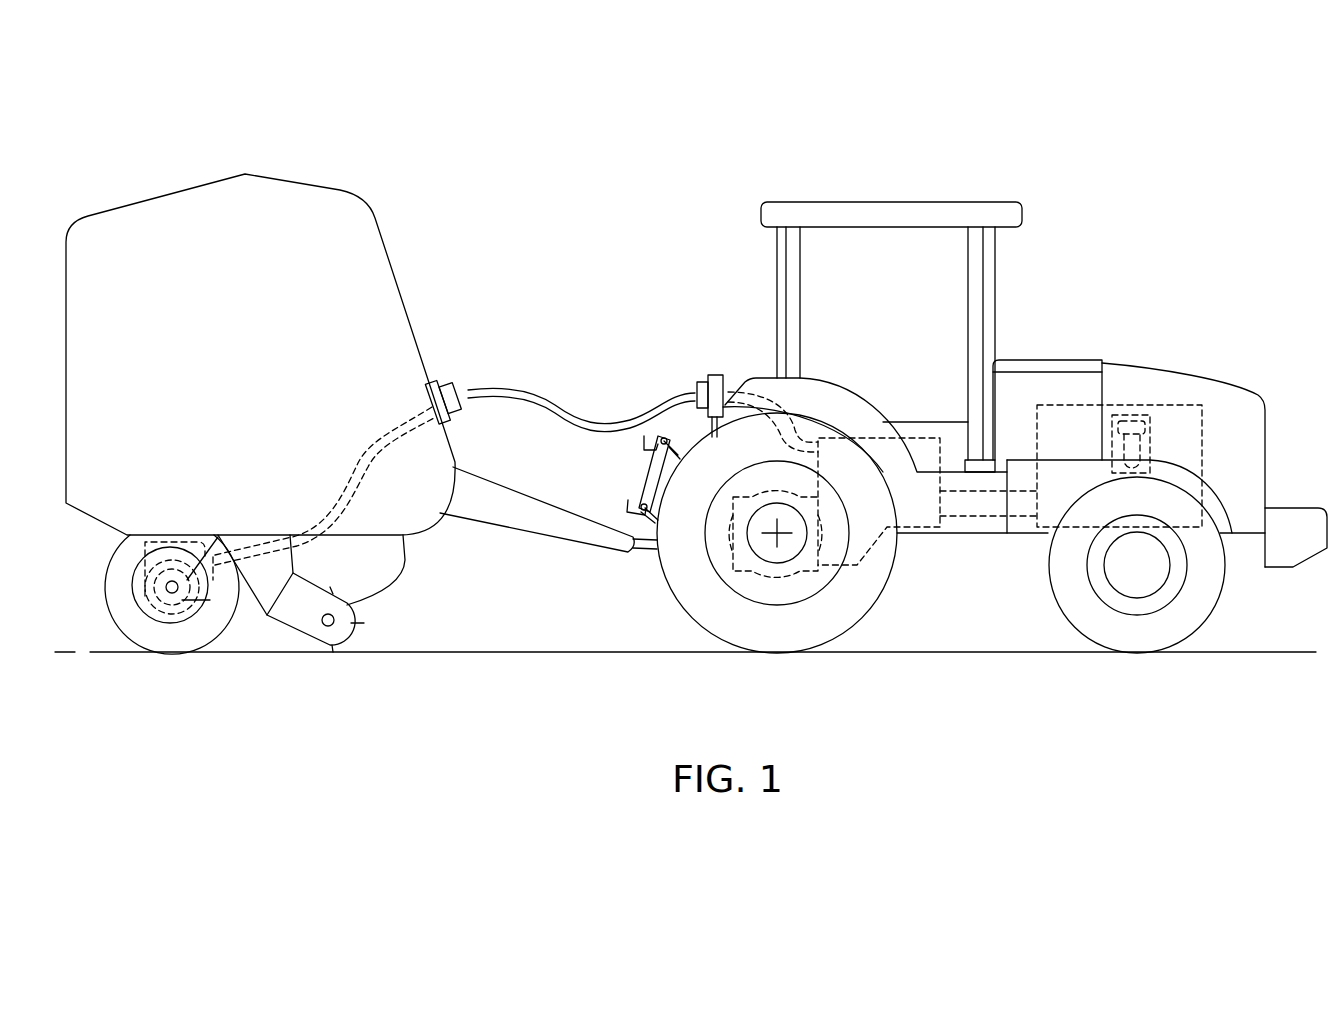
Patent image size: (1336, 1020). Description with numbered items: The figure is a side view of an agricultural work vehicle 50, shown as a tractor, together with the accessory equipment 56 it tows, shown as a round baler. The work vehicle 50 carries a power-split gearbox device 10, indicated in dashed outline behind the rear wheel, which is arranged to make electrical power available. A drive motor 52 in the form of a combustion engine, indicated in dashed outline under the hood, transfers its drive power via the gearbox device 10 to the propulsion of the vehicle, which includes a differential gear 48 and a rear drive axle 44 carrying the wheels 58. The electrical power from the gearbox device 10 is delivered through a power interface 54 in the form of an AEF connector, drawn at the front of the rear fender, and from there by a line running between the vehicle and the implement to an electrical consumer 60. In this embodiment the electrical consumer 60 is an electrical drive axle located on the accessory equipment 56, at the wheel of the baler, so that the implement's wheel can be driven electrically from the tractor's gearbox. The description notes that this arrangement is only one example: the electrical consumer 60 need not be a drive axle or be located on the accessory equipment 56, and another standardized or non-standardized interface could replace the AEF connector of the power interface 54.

The power-split gearbox device 10 is at (885, 527).
The rear drive axle 44 is at (767, 543).
The differential gear 48 is at (728, 535).
The agricultural work vehicle 50 is at (916, 217).
The drive motor 52 is at (1150, 403).
The power interface 54 is at (707, 378).
The accessory equipment 56 is at (299, 270).
The wheels 58 is at (807, 620).
The electrical consumer 60 is at (165, 537).